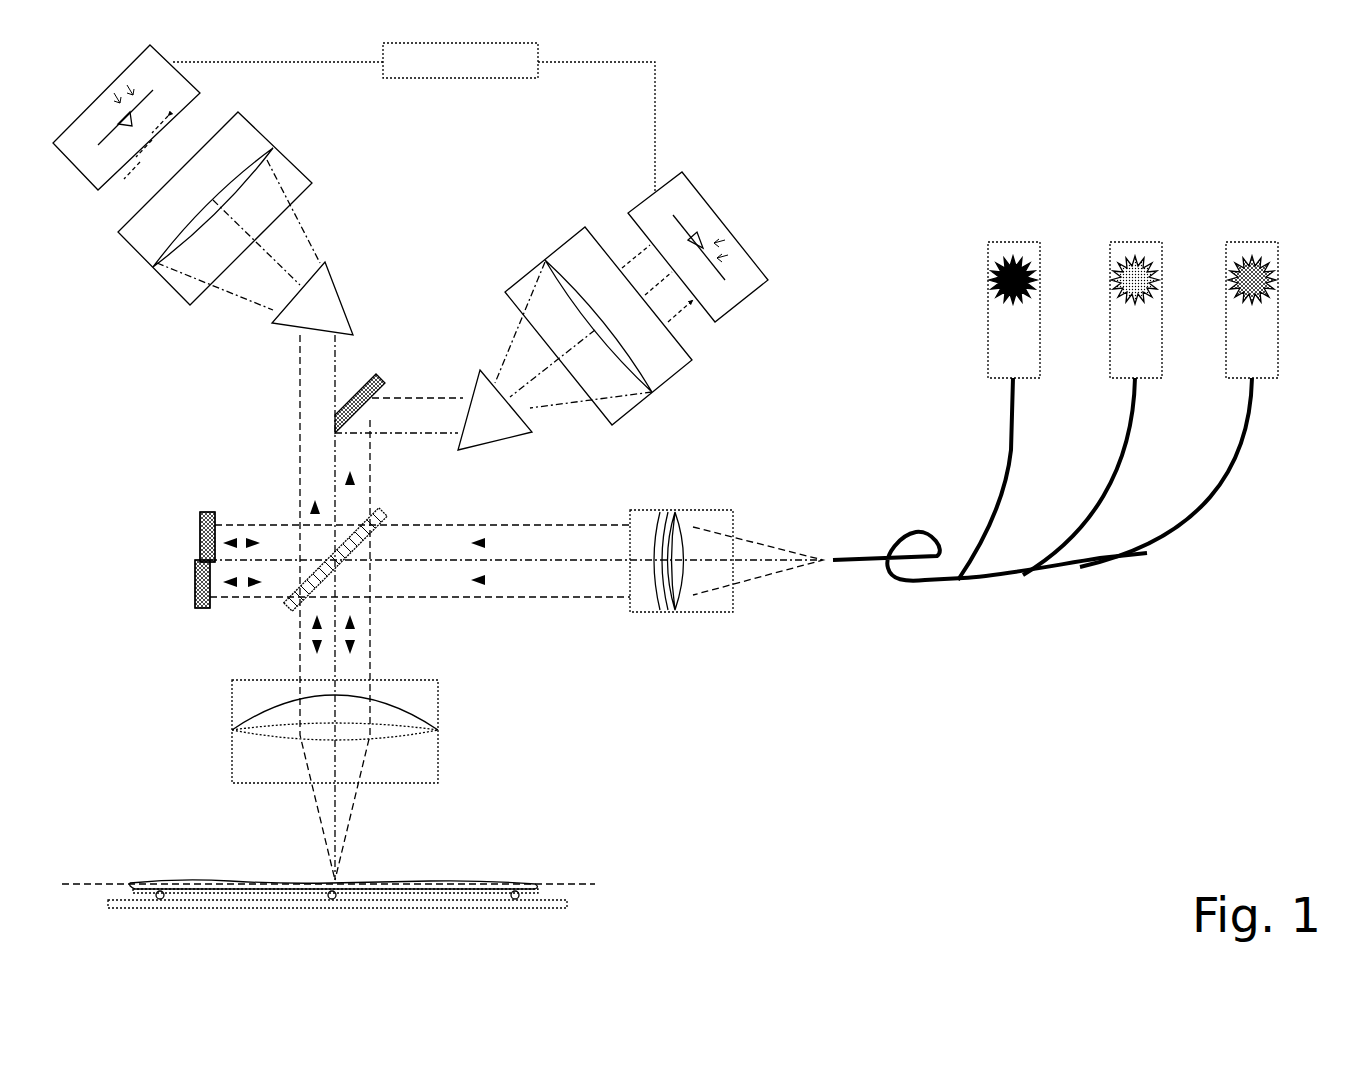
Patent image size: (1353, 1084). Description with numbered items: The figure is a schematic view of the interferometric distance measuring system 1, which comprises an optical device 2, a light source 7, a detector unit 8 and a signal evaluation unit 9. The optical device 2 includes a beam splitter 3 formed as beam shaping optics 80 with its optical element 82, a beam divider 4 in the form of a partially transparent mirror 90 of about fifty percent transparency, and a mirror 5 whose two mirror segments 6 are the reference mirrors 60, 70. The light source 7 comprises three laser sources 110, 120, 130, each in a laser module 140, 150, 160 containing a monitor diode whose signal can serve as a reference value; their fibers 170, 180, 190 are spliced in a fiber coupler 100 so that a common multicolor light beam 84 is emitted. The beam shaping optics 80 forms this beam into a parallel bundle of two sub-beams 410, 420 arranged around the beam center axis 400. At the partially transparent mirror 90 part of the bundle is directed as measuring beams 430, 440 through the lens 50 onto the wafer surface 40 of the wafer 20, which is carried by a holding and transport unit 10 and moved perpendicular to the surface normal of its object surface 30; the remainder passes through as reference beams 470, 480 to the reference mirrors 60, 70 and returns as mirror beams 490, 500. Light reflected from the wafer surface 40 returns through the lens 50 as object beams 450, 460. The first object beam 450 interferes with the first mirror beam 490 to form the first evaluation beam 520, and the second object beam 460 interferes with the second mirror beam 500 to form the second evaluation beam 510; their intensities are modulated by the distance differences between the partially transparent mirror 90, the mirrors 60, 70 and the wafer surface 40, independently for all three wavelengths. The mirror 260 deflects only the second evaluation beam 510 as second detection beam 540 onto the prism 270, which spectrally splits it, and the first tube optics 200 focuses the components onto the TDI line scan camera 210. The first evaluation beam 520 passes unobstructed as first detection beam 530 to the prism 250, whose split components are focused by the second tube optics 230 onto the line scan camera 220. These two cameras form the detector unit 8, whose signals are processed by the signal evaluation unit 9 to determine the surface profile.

The system 1 is at (803, 731).
The optical device 2 is at (118, 648).
The beam splitter 3 is at (742, 612).
The beam divider 4 is at (263, 608).
The mirror 5 is at (175, 538).
The mirror segments 6 is at (200, 548).
The light source 7 is at (1290, 323).
The detector unit 8 is at (720, 140).
The signal evaluation unit 9 is at (505, 78).
The holding and transport unit 10 is at (228, 908).
The wafer 20 is at (365, 888).
The object surface 30 is at (583, 884).
The wafer surface 40 is at (462, 882).
The lens 50 is at (440, 708).
The reference mirror 60 is at (187, 585).
The reference mirror 70 is at (197, 517).
The beam shaping optics 80 is at (640, 613).
The collimator lens 82 is at (682, 528).
The light beam 84 is at (760, 545).
The partially transparent mirror 90 is at (380, 535).
The fiber coupler 100 is at (900, 533).
The laser source 110 is at (1012, 252).
The laser source 120 is at (1136, 252).
The laser source 130 is at (1253, 252).
The laser module 140 is at (1002, 242).
The laser module 150 is at (1118, 242).
The laser module 160 is at (1234, 242).
The fiber 170 is at (1012, 455).
The fiber 180 is at (1132, 455).
The fiber 190 is at (1248, 455).
The first tube optics 200 is at (637, 413).
The TDI multi-channel line scan camera 210 is at (722, 325).
The TDI multi-channel line scan camera 220 is at (85, 182).
The second tube optics 230 is at (168, 285).
The prism 250 is at (336, 290).
The mirror 260 is at (370, 375).
The prism 270 is at (490, 447).
The beam center axis 400 is at (701, 560).
The sub-beam 410 is at (483, 533).
The sub-beam 420 is at (480, 587).
The measuring beam 430 is at (353, 640).
The measuring beam 440 is at (313, 647).
The object beam 450 is at (313, 622).
The object beam 460 is at (353, 615).
The reference beam 470 is at (228, 588).
The reference beam 480 is at (232, 530).
The mirror beam 490 is at (240, 587).
The mirror beam 500 is at (253, 530).
The second evaluation beam 510 is at (357, 475).
The first evaluation beam 520 is at (308, 508).
The first detection beam 530 is at (313, 372).
The second detection beam 540 is at (420, 410).